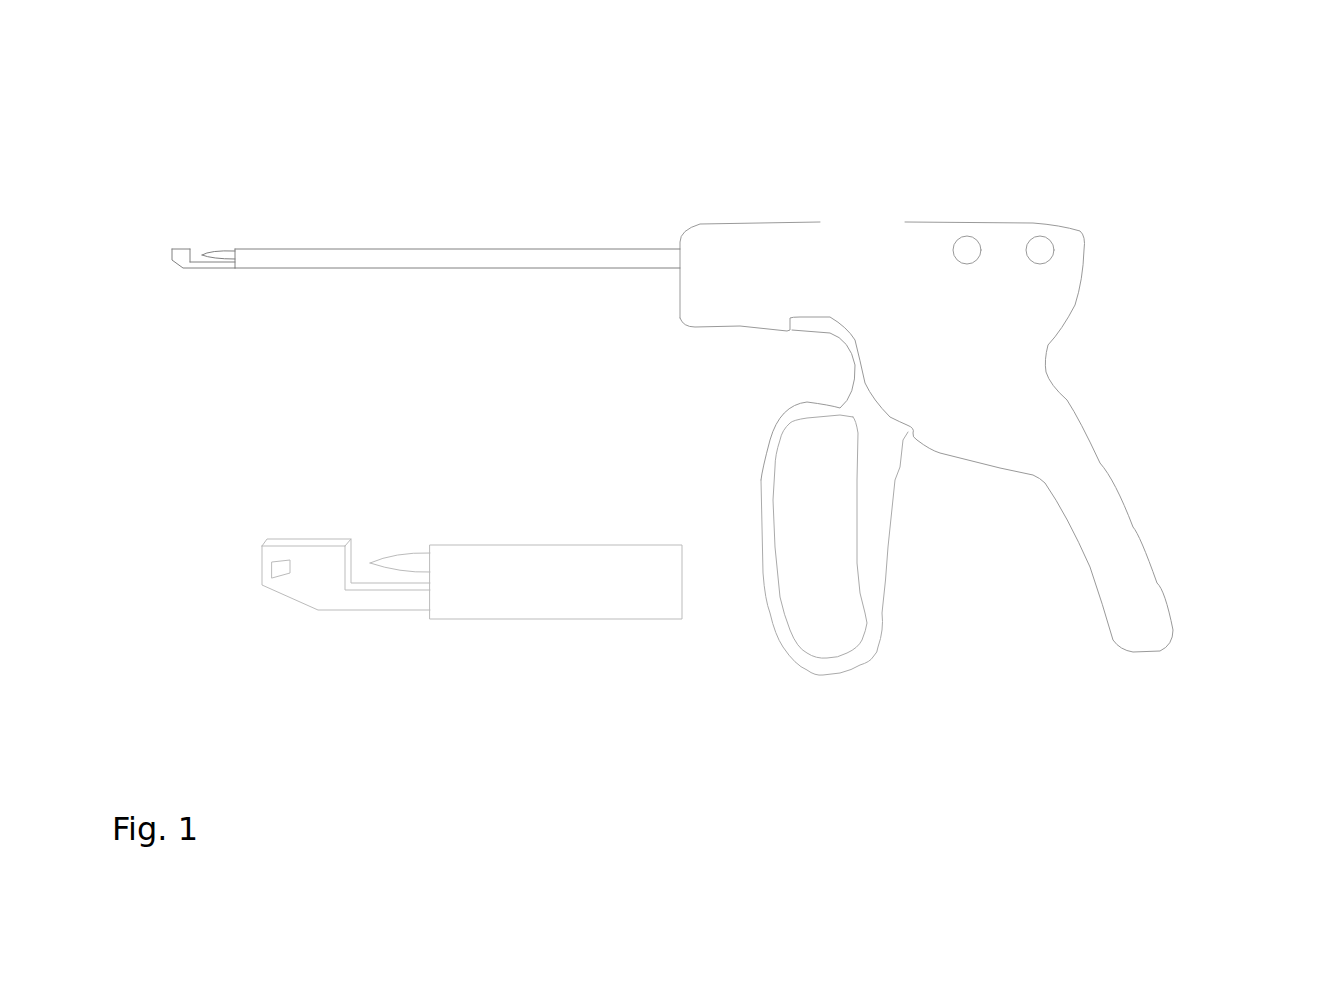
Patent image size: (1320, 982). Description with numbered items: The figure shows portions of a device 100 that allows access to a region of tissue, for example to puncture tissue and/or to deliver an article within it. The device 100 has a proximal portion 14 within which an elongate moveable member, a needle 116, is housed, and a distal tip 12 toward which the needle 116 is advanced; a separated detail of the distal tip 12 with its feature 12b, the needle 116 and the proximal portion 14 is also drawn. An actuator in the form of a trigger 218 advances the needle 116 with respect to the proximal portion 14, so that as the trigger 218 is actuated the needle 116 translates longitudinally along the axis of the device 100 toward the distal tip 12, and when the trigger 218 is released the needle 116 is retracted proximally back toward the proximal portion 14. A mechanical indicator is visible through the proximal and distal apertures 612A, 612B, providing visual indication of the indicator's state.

The device 100 is at (855, 195).
The distal tip 12 is at (188, 248).
The jaw recess 12b is at (348, 575).
The proximal portion 14 is at (675, 227).
The needle 116 is at (210, 248).
The trigger 218 is at (873, 660).
The proximal aperture 612A is at (1050, 243).
The distal aperture 612B is at (972, 240).